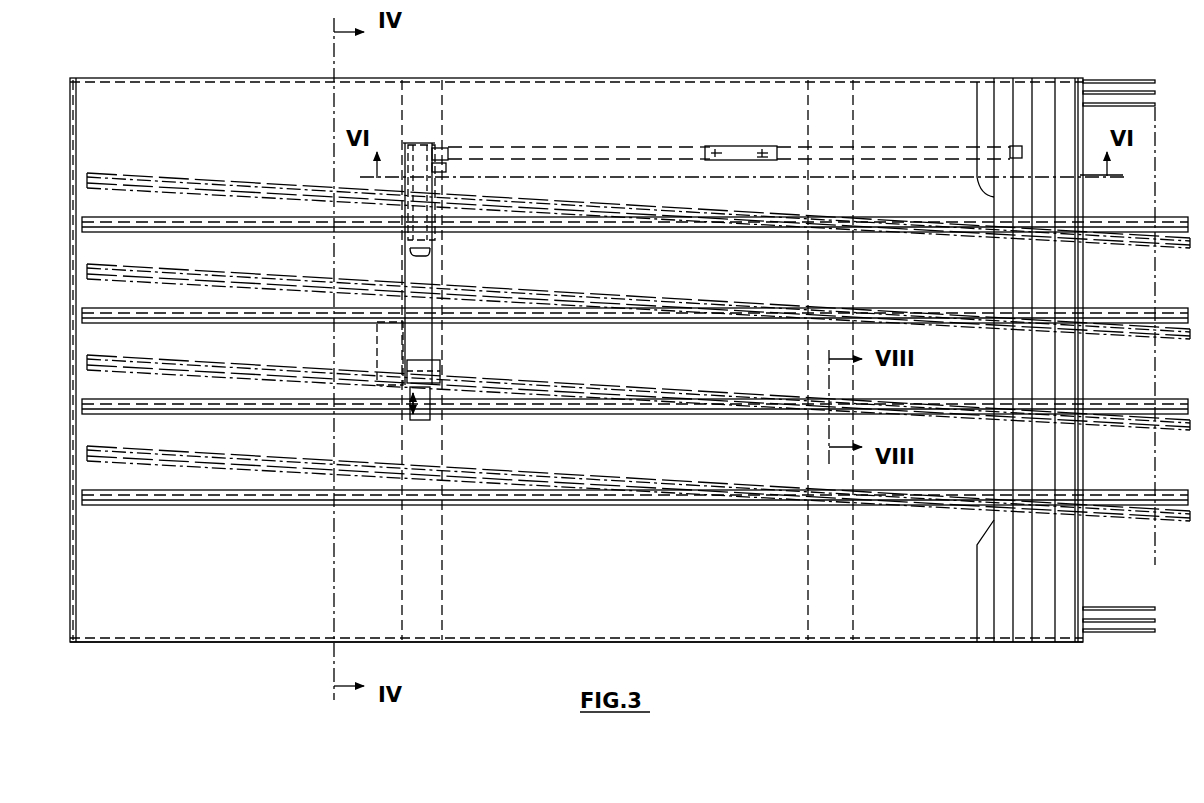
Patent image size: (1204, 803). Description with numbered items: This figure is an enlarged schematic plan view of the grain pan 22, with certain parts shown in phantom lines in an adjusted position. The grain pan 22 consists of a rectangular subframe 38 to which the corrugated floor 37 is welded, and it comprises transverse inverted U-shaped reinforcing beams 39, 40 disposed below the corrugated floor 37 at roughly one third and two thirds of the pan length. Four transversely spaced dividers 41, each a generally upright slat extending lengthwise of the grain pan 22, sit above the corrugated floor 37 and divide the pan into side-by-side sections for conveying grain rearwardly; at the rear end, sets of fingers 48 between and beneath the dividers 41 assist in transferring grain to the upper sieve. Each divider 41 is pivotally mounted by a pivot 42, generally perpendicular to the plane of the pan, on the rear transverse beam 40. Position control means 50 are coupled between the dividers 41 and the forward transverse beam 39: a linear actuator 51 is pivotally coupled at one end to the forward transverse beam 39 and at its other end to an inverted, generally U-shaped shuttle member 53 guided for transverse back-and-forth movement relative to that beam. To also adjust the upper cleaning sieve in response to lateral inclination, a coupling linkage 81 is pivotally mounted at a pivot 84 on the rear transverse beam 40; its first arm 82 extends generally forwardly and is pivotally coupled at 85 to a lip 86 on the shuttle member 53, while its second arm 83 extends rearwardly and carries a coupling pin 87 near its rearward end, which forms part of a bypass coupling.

The grain pan 22 is at (226, 78).
The corrugated floor 37 is at (1022, 92).
The rectangular subframe 38 is at (226, 643).
The forward transverse beam 39 is at (443, 551).
The rear transverse beam 40 is at (808, 573).
The dividers 41 is at (125, 217).
The pivot 42 is at (828, 233).
The fingers 48 is at (1124, 104).
The position control means 50 is at (442, 342).
The linear actuator 51 is at (443, 365).
The shuttle member 53 is at (422, 143).
The coupling linkage 81 is at (550, 143).
The first arm 82 is at (600, 146).
The second arm 83 is at (894, 147).
The pivot 84 is at (821, 153).
The pivotal coupling 85 is at (446, 153).
The lip 86 is at (440, 168).
The coupling pin 87 is at (1016, 146).